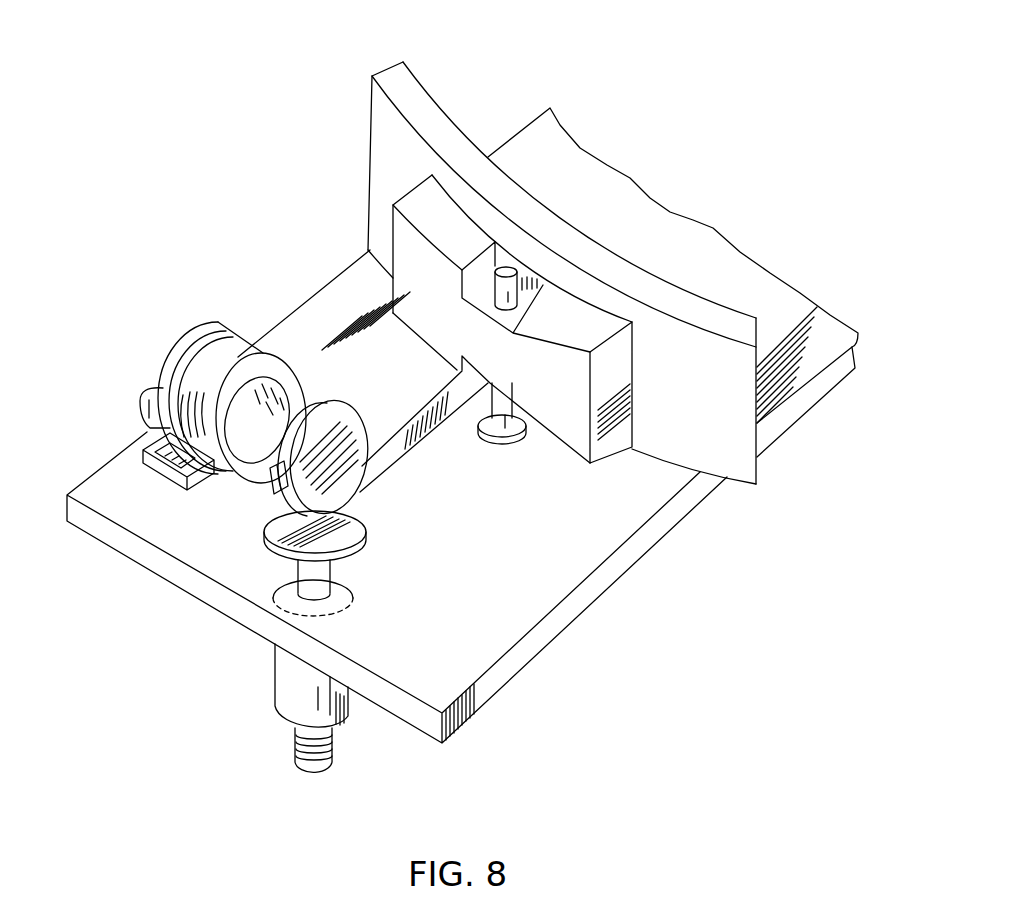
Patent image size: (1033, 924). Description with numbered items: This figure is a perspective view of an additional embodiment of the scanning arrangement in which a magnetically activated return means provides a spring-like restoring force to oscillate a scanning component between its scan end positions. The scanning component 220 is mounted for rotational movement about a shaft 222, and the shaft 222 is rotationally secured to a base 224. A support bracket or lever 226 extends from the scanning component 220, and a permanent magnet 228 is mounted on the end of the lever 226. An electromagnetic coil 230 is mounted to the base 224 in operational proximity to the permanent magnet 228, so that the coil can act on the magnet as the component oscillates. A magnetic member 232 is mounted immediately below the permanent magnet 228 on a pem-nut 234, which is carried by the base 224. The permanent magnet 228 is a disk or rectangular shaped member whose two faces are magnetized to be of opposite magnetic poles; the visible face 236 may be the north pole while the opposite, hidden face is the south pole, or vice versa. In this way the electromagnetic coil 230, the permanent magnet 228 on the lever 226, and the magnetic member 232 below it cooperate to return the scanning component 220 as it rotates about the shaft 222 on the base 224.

The scanning component 220 is at (437, 100).
The shaft 222 is at (517, 272).
The base 224 is at (618, 578).
The support bracket or lever 226 is at (430, 437).
The permanent magnet 228 is at (348, 486).
The electromagnetic coil 230 is at (245, 345).
The magnetic member 232 is at (360, 553).
The pem-nut 234 is at (285, 680).
The face 236 is at (300, 481).